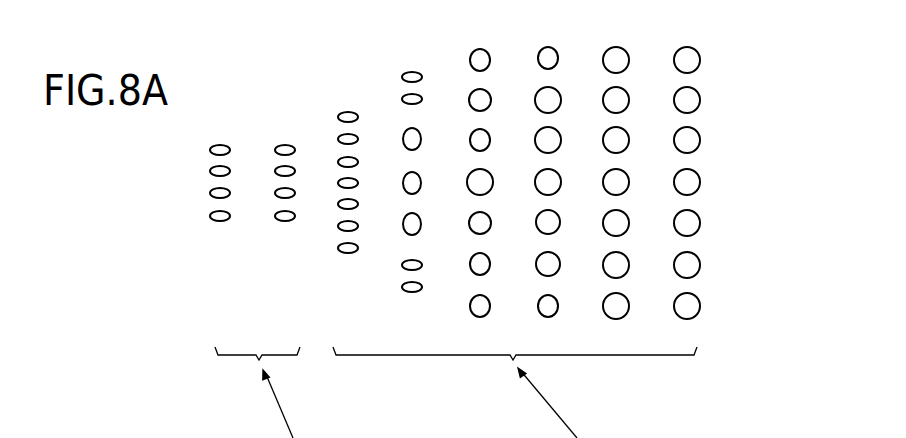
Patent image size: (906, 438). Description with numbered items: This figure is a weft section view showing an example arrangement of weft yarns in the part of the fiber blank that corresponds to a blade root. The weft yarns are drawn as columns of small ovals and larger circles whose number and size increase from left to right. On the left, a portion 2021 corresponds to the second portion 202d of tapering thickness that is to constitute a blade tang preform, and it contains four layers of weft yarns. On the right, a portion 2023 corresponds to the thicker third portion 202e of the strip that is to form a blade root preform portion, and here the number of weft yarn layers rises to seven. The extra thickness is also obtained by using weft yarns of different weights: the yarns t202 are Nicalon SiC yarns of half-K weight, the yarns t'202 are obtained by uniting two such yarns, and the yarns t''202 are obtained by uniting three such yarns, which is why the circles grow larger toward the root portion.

The portion of the fiber strip 2021 is at (240, 270).
The portion of the fiber strip 2023 is at (566, 221).
The second portion 202d is at (380, 168).
The third portion 202e is at (622, 162).
The weft yarns t202 is at (221, 149).
The weft yarns t'202 is at (391, 237).
The weft yarns t''202 is at (725, 172).